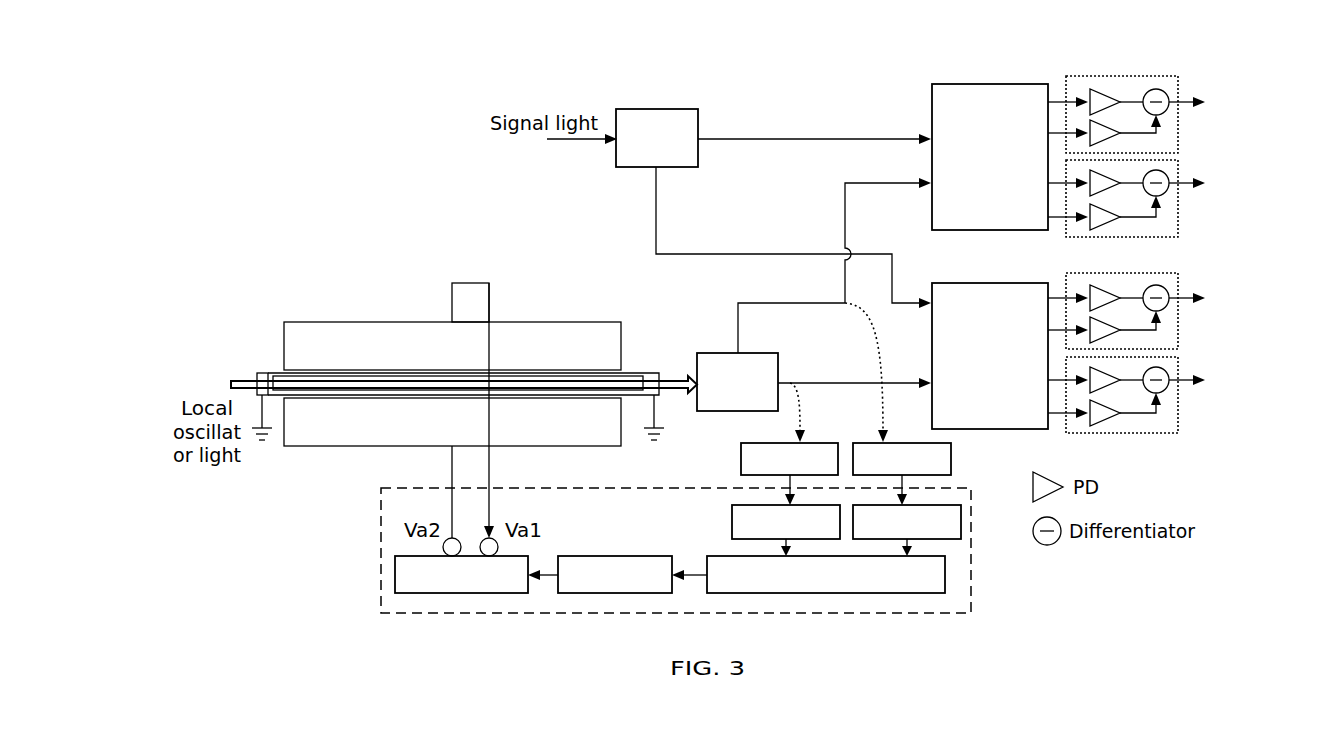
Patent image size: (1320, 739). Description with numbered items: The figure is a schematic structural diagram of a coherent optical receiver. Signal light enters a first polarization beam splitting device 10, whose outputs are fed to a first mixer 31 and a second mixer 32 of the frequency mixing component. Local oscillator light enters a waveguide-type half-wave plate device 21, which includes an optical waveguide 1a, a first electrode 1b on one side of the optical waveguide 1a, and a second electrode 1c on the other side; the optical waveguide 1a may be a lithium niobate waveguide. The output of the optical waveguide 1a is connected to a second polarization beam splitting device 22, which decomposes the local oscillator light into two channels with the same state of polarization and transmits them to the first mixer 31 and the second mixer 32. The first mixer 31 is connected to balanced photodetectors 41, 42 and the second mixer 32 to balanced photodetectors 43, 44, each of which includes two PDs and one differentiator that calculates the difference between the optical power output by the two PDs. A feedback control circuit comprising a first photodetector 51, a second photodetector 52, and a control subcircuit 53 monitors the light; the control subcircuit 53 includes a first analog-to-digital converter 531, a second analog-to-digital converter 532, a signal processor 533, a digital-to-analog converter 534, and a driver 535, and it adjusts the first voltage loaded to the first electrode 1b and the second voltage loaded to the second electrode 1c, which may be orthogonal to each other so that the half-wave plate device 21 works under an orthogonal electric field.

The first polarization beam splitting device 10 is at (657, 138).
The second polarization beam splitting device 22 is at (737, 382).
The first mixer 31 is at (990, 157).
The second mixer 32 is at (990, 356).
The balanced photodetector 41 is at (1177, 88).
The balanced photodetector 42 is at (1177, 167).
The balanced photodetector 43 is at (1177, 280).
The balanced photodetector 44 is at (1177, 368).
The first photodetector 51 is at (789, 459).
The second photodetector 52 is at (902, 459).
The control subcircuit 53 is at (380, 543).
The first analog-to-digital converter 531 is at (786, 522).
The second analog-to-digital converter 532 is at (907, 522).
The signal processor 533 is at (826, 574).
The digital-to-analog converter 534 is at (615, 574).
The driver 535 is at (461, 574).
The half-wave plate device 21 is at (383, 277).
The optical waveguide 1a is at (265, 375).
The first electrode 1b is at (342, 337).
The second electrode 1c is at (387, 410).